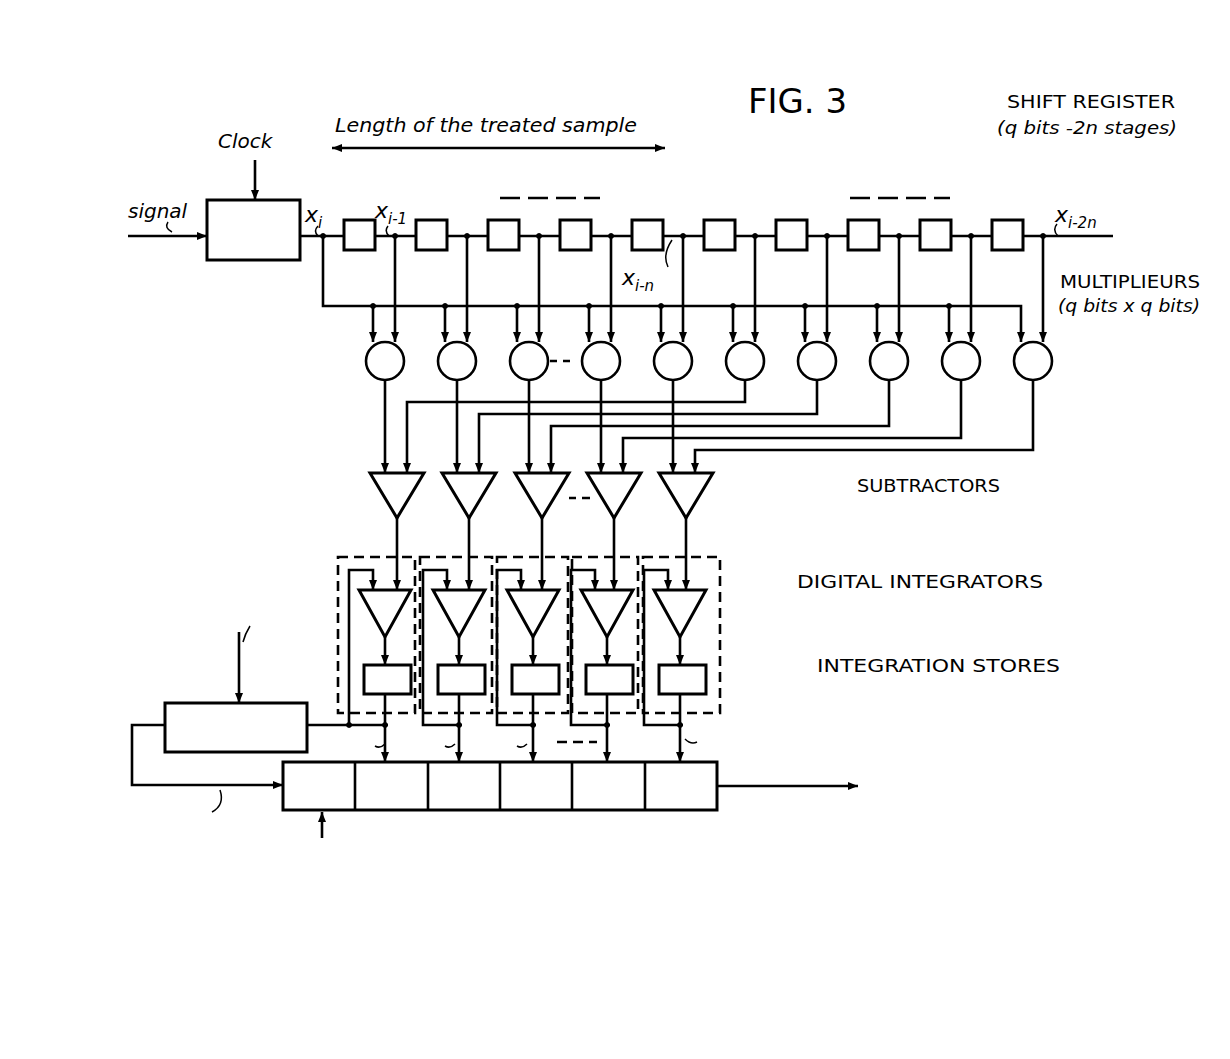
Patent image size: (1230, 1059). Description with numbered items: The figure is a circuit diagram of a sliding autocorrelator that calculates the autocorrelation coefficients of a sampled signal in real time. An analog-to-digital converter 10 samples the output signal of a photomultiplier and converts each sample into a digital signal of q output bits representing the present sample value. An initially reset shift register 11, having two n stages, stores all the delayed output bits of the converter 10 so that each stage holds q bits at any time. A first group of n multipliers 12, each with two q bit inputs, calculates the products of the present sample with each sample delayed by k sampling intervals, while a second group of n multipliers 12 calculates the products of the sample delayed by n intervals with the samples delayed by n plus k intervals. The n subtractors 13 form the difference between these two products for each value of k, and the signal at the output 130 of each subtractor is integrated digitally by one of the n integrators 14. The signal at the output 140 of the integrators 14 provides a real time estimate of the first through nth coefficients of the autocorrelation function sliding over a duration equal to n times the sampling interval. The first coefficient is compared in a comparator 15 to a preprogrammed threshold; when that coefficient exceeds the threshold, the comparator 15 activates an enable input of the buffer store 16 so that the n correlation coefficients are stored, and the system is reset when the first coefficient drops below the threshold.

The analog-to-digital converter 10 is at (237, 260).
The shift register 11 is at (1005, 219).
The multipliers 12 is at (1134, 347).
The subtractors 13 is at (677, 485).
The subtractor output 130 is at (690, 521).
The integrators 14 is at (627, 659).
The integrator output 140 is at (707, 696).
The comparator 15 is at (186, 702).
The buffer store 16 is at (290, 808).